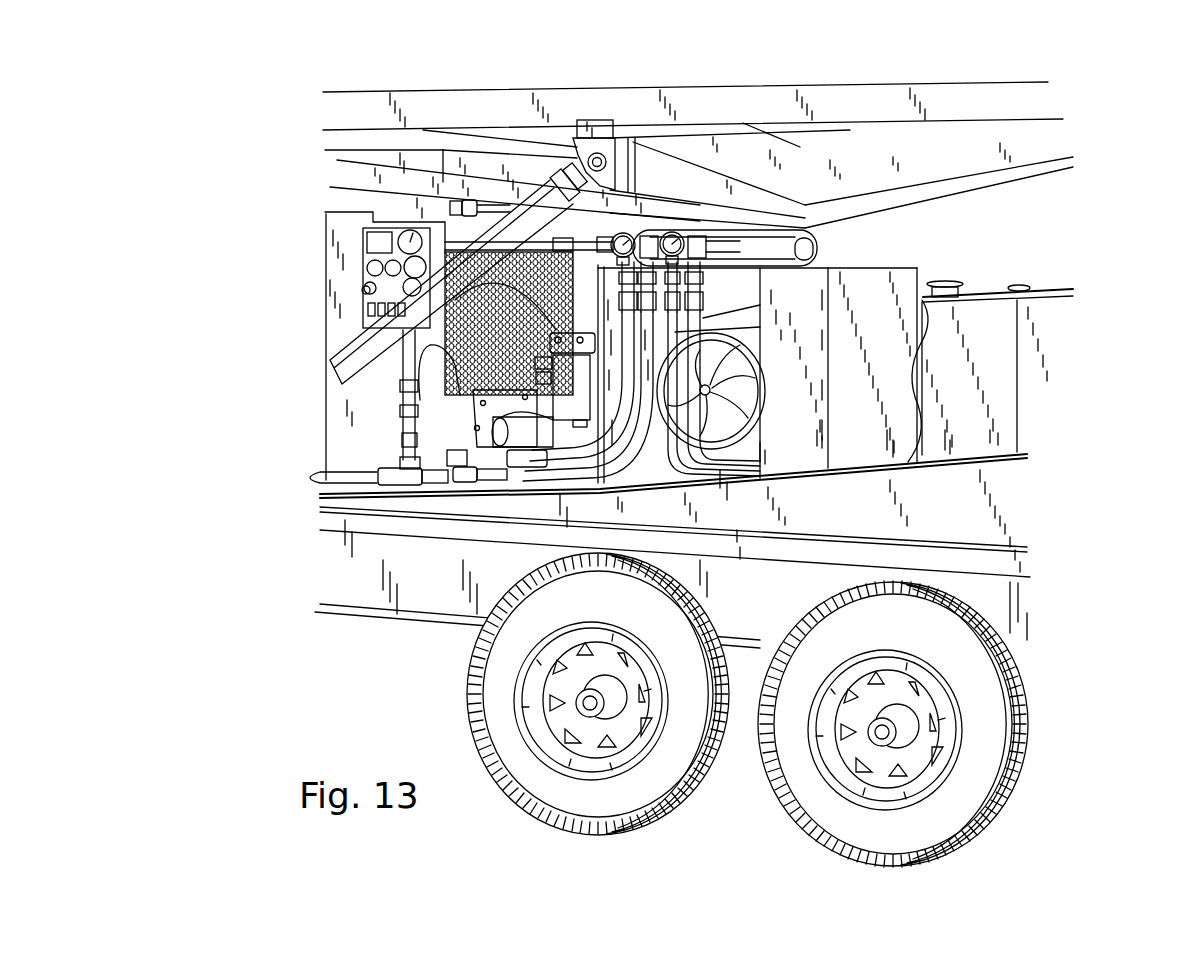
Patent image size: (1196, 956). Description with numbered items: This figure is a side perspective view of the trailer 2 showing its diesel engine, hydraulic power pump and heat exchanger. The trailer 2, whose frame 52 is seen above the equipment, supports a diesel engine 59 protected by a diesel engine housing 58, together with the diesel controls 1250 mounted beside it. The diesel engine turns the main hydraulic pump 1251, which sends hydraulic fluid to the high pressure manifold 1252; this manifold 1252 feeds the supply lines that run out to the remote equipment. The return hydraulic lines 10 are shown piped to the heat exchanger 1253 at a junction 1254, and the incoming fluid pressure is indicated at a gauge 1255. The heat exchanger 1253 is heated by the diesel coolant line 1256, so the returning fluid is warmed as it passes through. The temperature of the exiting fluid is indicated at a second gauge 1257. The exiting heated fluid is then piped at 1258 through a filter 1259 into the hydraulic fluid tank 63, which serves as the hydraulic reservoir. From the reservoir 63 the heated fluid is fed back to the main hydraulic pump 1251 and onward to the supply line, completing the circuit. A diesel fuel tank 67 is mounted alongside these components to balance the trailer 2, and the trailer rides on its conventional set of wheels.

The trailer 2 is at (1008, 605).
The return hydraulic lines 10 is at (767, 300).
The frame 52 is at (838, 107).
The diesel engine housing 58 is at (473, 400).
The diesel engine 59 is at (507, 482).
The hydraulic fluid tank 63 is at (785, 320).
The diesel fuel tank 67 is at (993, 323).
The diesel controls 1250 is at (363, 247).
The main hydraulic pump 1251 is at (625, 486).
The high pressure manifold 1252 is at (630, 428).
The heat exchanger 1253 is at (757, 240).
The junction 1254 is at (880, 328).
The gauge 1255 is at (672, 232).
The diesel coolant line 1256 is at (567, 238).
The gauge 1257 is at (623, 233).
The piping 1258 is at (653, 463).
The filter 1259 is at (683, 435).